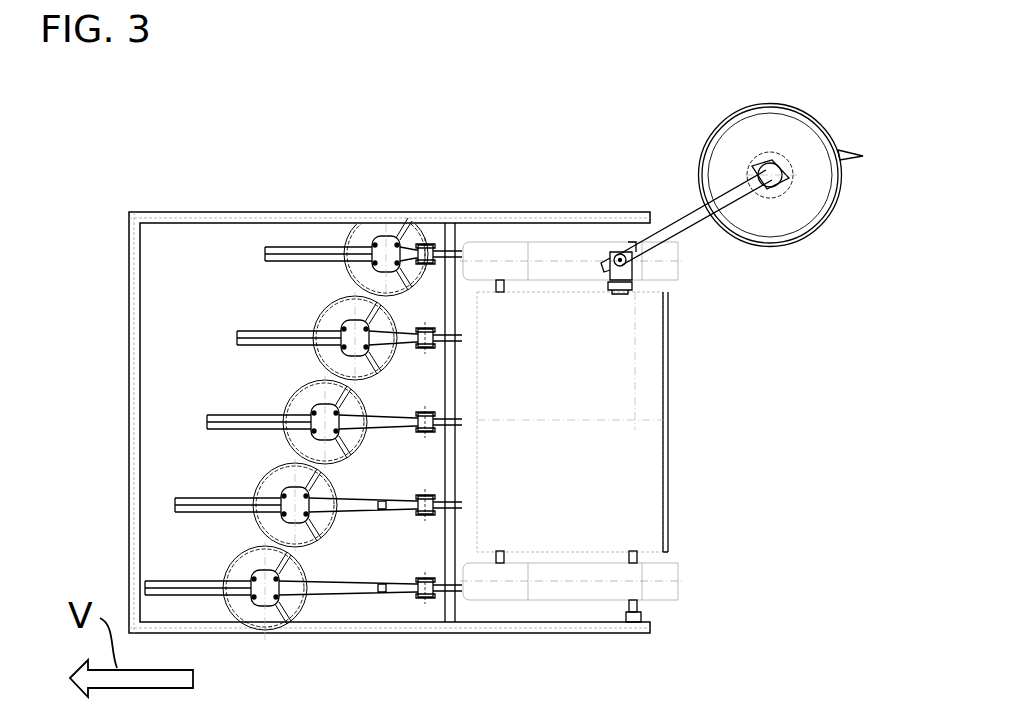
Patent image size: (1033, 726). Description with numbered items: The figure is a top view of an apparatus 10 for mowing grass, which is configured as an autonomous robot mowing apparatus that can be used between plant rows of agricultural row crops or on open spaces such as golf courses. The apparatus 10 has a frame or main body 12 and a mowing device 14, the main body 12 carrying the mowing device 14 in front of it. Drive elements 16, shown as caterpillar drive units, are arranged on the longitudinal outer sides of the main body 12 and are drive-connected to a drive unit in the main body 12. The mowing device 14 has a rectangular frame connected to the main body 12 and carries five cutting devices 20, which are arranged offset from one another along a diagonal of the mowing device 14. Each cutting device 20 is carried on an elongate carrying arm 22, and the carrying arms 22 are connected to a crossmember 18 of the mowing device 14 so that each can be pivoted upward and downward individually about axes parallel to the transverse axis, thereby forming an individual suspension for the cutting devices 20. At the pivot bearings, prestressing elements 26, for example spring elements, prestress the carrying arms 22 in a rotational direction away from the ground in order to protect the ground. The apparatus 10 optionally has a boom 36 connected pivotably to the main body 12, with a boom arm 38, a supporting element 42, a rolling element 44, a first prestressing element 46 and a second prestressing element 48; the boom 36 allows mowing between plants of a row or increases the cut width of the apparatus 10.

The apparatus for mowing grass 10 is at (504, 98).
The main body 12 is at (650, 478).
The mowing device 14 is at (272, 172).
The drive elements 16 is at (670, 257).
The crossmember 18 is at (458, 256).
The cutting devices 20 is at (352, 318).
The carrying arms 22 is at (270, 341).
The prestressing elements 26 is at (423, 247).
The boom 36 is at (826, 236).
The boom arm 38 is at (700, 212).
The supporting element 42 is at (856, 150).
The rolling element 44 is at (706, 134).
The first prestressing element 46 is at (625, 250).
The second prestressing element 48 is at (630, 287).